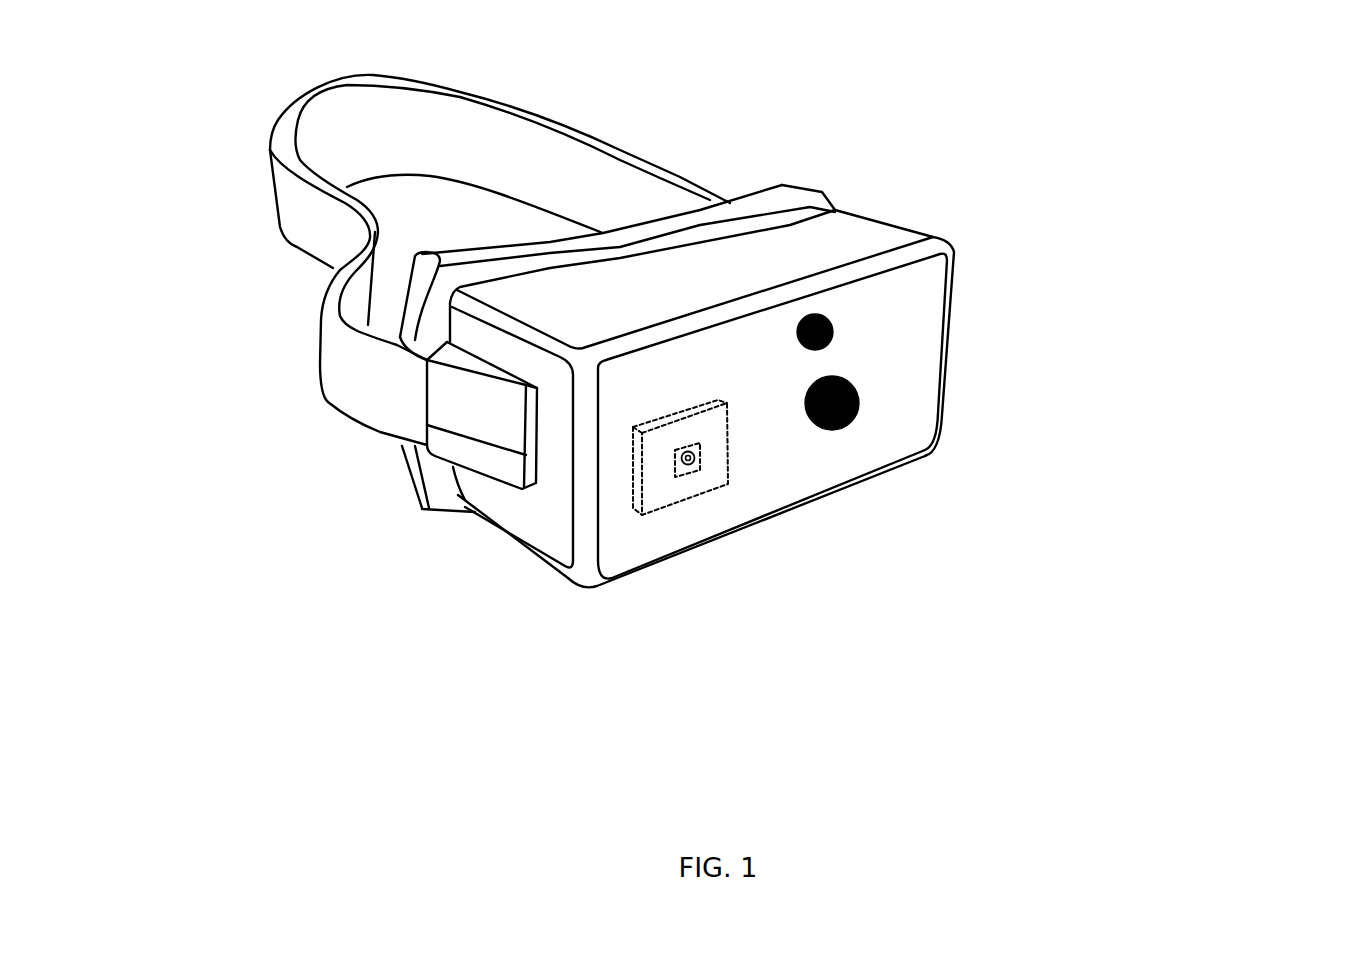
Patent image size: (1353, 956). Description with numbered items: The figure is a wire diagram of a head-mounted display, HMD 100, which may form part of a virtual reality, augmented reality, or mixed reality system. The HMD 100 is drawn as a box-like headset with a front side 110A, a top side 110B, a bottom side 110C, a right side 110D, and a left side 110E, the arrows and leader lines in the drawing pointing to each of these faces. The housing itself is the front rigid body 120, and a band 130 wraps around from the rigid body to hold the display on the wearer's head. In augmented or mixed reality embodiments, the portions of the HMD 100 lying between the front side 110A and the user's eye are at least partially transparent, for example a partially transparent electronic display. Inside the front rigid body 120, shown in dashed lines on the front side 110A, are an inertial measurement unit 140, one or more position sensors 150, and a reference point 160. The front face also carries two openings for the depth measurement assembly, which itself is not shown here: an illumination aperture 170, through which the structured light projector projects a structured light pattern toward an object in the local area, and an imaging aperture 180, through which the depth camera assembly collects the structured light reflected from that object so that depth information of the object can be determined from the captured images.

The HMD 100 is at (190, 104).
The front side 110A is at (628, 532).
The top side 110B is at (545, 298).
The bottom side 110C is at (497, 555).
The right side 110D is at (545, 510).
The left side 110E is at (915, 232).
The front rigid body 120 is at (947, 240).
The band 130 is at (618, 148).
The inertial measurement unit 140 is at (731, 473).
The position sensors 150 is at (676, 478).
The reference point 160 is at (690, 465).
The illumination aperture 170 is at (836, 332).
The imaging aperture 180 is at (860, 405).